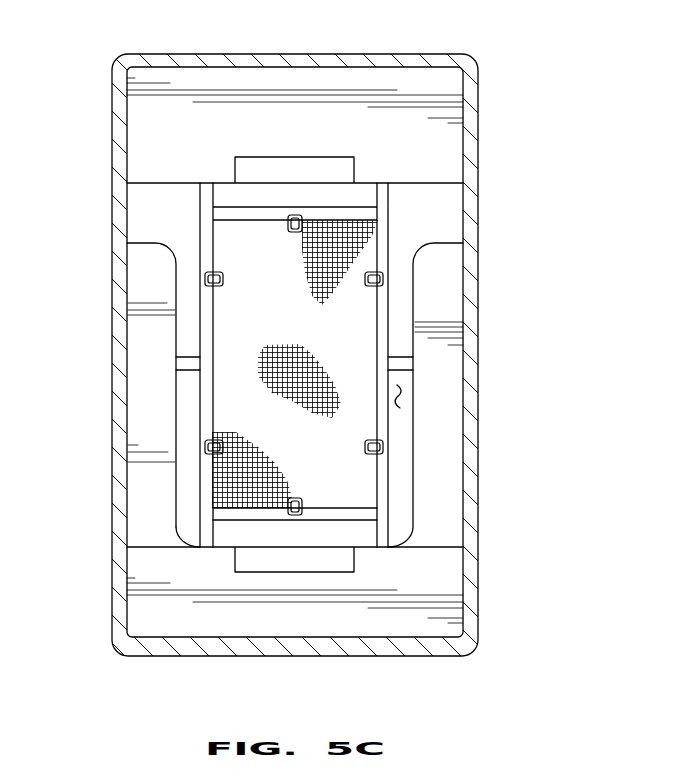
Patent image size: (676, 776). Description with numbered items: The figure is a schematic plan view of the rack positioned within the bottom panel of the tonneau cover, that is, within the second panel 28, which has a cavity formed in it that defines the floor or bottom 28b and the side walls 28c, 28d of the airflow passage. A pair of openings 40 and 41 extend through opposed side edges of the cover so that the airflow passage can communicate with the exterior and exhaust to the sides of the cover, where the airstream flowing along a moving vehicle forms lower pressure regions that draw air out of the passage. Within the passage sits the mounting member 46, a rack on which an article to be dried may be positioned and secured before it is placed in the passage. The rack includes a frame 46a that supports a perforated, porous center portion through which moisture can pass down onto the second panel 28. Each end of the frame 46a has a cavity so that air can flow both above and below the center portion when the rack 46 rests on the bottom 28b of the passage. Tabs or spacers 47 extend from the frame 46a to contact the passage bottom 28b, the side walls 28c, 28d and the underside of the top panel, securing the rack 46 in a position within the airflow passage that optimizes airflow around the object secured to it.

The second panel 28 is at (480, 100).
The opening 40 is at (120, 210).
The opening 41 is at (472, 212).
The mounting member 46 is at (200, 227).
The frame 46a is at (228, 517).
The floor or bottom 28b is at (413, 403).
The side wall 28c is at (175, 332).
The side wall 28d is at (413, 432).
The tabs or spacers 47 is at (203, 530).